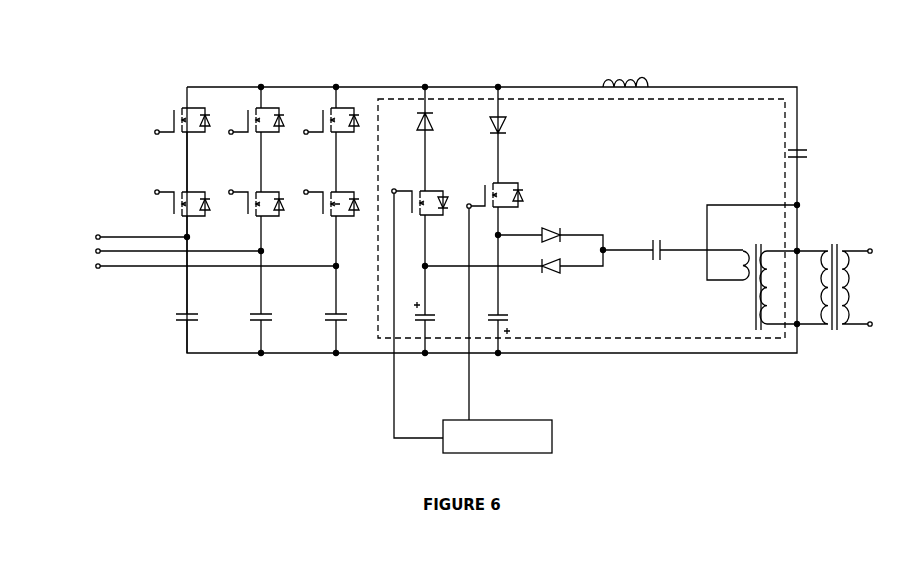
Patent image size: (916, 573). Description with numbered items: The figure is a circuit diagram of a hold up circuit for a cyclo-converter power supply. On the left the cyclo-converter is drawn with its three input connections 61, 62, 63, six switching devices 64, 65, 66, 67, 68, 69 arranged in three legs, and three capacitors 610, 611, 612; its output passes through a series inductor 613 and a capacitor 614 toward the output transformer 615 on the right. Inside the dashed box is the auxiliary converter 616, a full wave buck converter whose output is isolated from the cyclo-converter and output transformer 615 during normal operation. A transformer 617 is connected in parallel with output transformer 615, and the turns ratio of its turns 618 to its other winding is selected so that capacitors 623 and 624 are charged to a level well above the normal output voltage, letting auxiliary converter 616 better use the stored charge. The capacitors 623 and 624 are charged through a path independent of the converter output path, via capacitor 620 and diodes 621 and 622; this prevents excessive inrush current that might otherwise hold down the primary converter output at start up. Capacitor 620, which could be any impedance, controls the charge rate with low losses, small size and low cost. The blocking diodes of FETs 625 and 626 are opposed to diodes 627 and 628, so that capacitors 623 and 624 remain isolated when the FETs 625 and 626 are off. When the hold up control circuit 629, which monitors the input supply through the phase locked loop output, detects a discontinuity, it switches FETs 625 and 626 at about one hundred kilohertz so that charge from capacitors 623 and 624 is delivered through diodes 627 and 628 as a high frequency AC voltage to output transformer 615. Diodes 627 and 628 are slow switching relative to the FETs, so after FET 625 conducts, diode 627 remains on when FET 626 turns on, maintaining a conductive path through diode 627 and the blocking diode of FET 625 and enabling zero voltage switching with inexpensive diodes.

The first input terminal 61 is at (96, 236).
The second input terminal 62 is at (96, 251).
The third input terminal 63 is at (96, 266).
The switching transistor 64 is at (187, 105).
The switching transistor 65 is at (187, 190).
The switching transistor 66 is at (261, 105).
The switching transistor 67 is at (261, 190).
The switching transistor 68 is at (336, 105).
The switching transistor 69 is at (336, 190).
The capacitor 610 is at (189, 313).
The capacitor 611 is at (263, 313).
The capacitor 612 is at (338, 313).
The inductor 613 is at (633, 72).
The capacitor 614 is at (806, 152).
The output transformer 615 is at (834, 246).
The auxiliary converter 616 is at (727, 128).
The transformer 617 is at (772, 234).
The turns 618 is at (771, 327).
The capacitor 620 is at (655, 239).
The diode 621 is at (548, 233).
The diode 622 is at (549, 273).
The capacitor 623 is at (426, 314).
The capacitor 624 is at (499, 314).
The FET 625 is at (430, 192).
The FET 626 is at (501, 186).
The diode 627 is at (428, 119).
The diode 628 is at (502, 128).
The hold up control circuit 629 is at (552, 433).